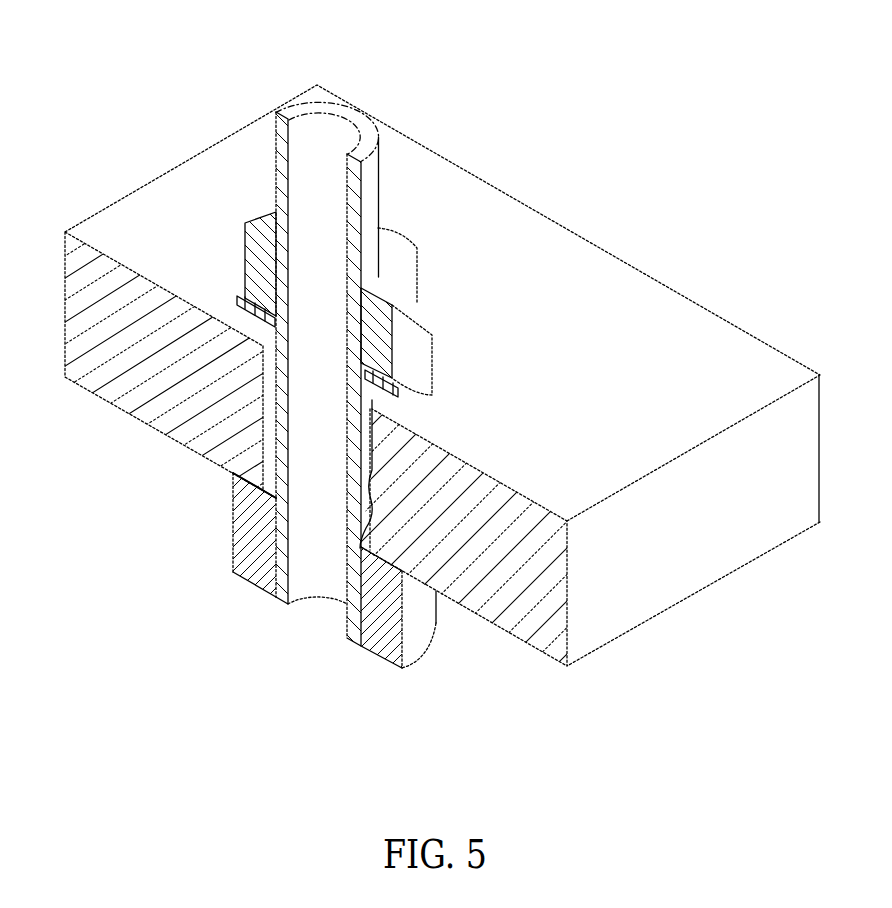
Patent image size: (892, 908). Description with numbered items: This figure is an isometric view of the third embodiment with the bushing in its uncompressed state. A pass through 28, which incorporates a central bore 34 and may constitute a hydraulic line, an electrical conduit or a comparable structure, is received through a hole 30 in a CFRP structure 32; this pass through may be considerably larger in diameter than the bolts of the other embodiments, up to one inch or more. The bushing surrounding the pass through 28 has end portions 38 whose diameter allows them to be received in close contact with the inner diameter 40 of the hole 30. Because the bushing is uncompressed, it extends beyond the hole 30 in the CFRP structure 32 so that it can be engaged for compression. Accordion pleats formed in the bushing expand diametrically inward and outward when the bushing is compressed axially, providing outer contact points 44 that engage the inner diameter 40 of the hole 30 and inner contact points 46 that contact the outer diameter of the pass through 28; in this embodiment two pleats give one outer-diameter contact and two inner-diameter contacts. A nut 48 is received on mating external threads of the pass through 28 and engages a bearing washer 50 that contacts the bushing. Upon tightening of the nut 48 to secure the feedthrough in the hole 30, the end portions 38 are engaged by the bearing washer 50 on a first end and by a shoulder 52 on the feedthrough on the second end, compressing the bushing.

The pass through 28 is at (378, 340).
The hole 30 is at (370, 454).
The CFRP structure 32 is at (420, 382).
The central bore 34 is at (330, 133).
The end portions 38 is at (378, 405).
The inner diameter 40 is at (263, 390).
The outer contact points 44 is at (263, 412).
The inner contact points 46 is at (275, 437).
The nut 48 is at (403, 304).
The bearing washer 50 is at (243, 298).
The shoulder 52 is at (388, 566).